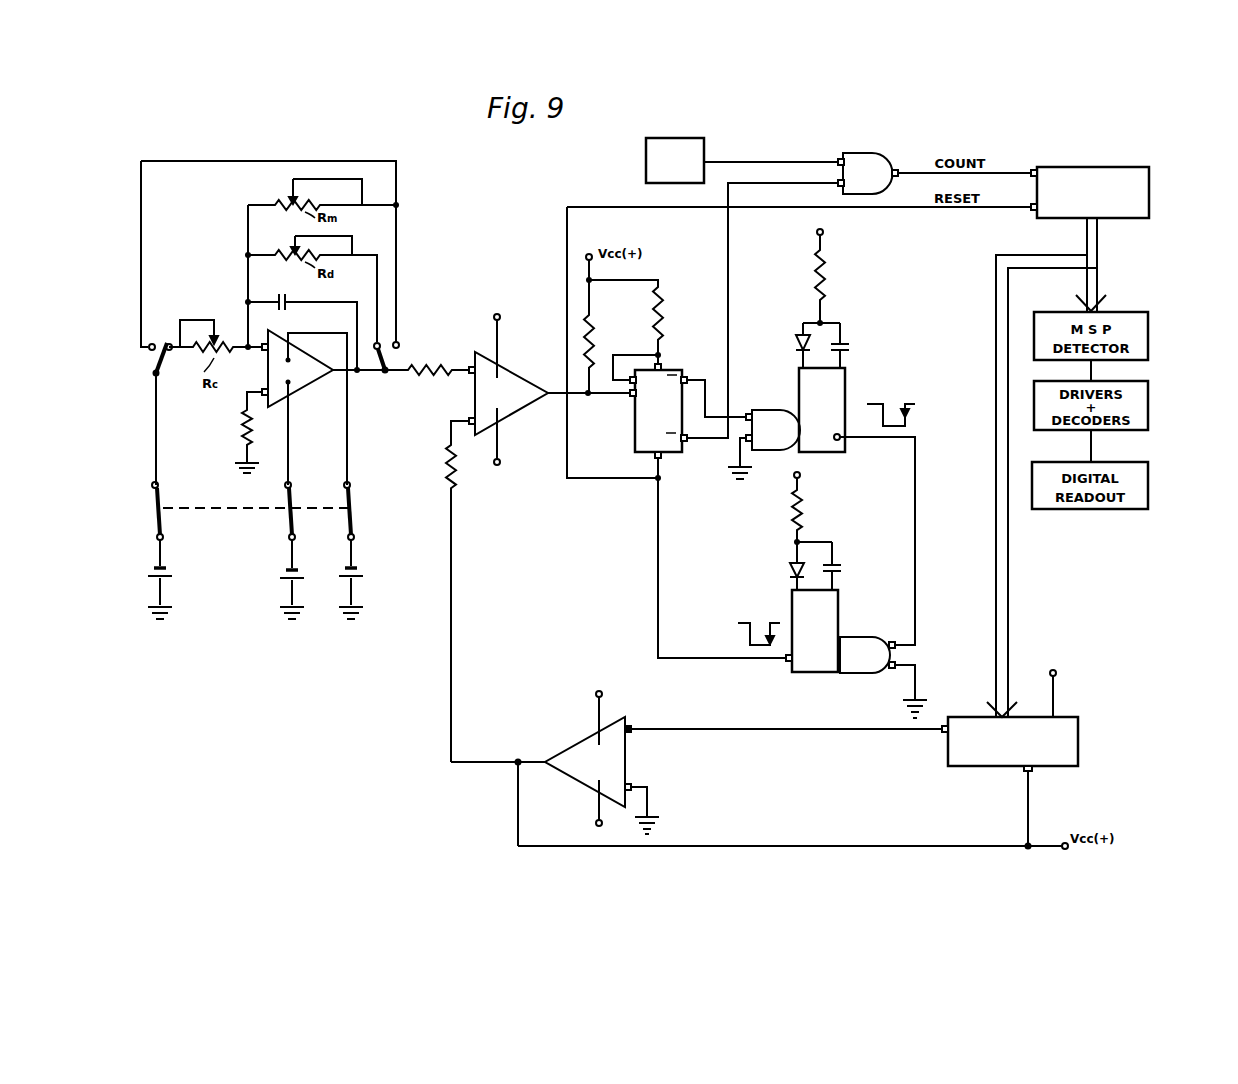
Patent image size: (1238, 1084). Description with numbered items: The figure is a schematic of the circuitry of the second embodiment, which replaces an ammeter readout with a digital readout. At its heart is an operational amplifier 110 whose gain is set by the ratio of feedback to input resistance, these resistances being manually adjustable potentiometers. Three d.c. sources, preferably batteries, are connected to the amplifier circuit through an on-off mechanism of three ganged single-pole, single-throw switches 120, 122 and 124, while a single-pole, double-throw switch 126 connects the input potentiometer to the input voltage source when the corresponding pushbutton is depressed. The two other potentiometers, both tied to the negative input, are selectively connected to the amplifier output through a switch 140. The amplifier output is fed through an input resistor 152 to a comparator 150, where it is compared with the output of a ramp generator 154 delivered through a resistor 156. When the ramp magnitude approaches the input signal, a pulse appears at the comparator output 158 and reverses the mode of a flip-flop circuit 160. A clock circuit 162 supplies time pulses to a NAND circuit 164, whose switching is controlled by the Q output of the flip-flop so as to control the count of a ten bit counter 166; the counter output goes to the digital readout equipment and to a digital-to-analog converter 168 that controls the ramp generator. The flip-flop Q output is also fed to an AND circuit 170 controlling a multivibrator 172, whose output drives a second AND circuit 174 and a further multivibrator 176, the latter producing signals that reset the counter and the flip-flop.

The operational amplifier 110 is at (305, 370).
The single-pole, single-throw switch 120 is at (160, 505).
The single-pole, single-throw switch 122 is at (287, 498).
The single-pole, single-throw switch 124 is at (352, 497).
The single-pole, double-throw switch 126 is at (152, 371).
The switch 140 is at (398, 356).
The comparator 150 is at (515, 393).
The input resistor 152 is at (430, 378).
The ramp generator 154 is at (603, 762).
The resistor 156 is at (455, 481).
The comparator output 158 is at (577, 394).
The flip-flop circuit 160 is at (667, 369).
The clock circuit 162 is at (697, 143).
The NAND circuit 164 is at (855, 150).
The ten bit counter 166 is at (1136, 203).
The digital-to-analog converter 168 is at (1084, 722).
The AND circuit 170 is at (760, 408).
The multivibrator 172 is at (837, 396).
The second AND circuit 174 is at (868, 636).
The multivibrator 176 is at (834, 594).